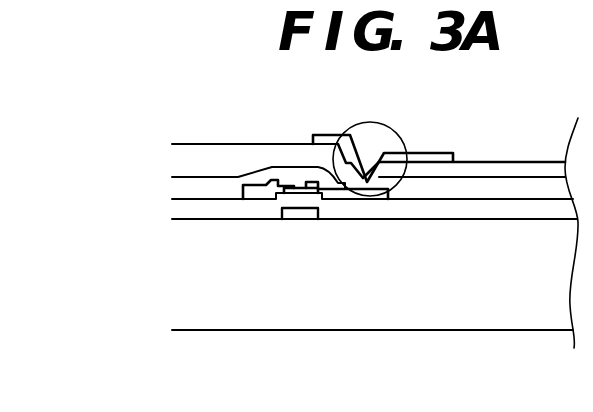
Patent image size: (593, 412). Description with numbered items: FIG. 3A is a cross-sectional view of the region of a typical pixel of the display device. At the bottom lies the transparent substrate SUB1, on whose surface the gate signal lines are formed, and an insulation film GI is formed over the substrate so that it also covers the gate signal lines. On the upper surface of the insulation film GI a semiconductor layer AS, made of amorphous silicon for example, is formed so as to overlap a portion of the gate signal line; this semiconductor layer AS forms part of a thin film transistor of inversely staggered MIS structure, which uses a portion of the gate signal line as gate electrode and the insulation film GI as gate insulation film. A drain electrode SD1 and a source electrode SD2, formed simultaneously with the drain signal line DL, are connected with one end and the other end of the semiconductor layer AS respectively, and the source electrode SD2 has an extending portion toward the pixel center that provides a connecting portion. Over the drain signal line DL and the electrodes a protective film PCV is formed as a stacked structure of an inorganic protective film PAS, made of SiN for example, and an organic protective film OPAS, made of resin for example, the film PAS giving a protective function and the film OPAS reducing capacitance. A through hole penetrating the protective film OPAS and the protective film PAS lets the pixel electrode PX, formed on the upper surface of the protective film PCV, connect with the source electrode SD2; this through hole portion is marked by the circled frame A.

The drain signal line DL is at (219, 82).
The drain electrode SD1 is at (279, 183).
The source electrode SD2 is at (328, 182).
The circled frame A is at (370, 146).
The pixel electrode PX is at (432, 157).
The protective film PCV is at (93, 150).
The protective film OPAS is at (192, 157).
The protective film PAS is at (192, 187).
The transparent substrate SUB1 is at (258, 313).
The semiconductor layer AS is at (298, 188).
The insulation film GI is at (497, 213).